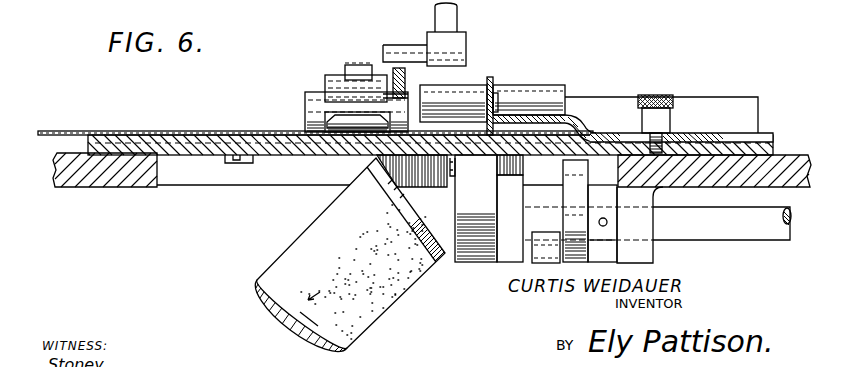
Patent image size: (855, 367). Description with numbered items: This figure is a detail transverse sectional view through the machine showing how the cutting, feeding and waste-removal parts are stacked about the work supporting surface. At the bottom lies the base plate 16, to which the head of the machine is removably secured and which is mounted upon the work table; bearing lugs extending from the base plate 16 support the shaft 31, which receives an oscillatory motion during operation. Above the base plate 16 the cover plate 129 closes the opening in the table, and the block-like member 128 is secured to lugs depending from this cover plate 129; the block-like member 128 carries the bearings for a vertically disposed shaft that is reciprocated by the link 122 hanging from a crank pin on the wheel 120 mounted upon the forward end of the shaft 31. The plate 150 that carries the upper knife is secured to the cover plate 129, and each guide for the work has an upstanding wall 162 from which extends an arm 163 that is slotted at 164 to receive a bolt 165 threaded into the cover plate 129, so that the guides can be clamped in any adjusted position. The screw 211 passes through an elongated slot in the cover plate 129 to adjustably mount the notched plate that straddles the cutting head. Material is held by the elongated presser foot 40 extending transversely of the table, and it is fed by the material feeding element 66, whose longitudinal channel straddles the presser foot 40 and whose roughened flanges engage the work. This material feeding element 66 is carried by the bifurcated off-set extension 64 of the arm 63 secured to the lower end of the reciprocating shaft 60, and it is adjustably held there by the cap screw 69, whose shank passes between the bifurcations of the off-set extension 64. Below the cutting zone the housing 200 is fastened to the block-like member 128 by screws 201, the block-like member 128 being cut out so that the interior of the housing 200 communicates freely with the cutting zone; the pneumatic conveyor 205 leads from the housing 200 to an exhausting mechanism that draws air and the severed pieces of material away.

The base plate 16 is at (80, 178).
The shaft 31 is at (704, 225).
The presser foot 40 is at (303, 117).
The shaft 60 is at (458, 15).
The arm 63 is at (415, 58).
The off-set extension 64 is at (387, 47).
The material feeding element 66 is at (315, 105).
The cap screw 69 is at (345, 72).
The wheel 120 is at (575, 193).
The link 122 is at (545, 247).
The block-like member 128 is at (468, 190).
The cover plate 129 is at (121, 146).
The plate 150 is at (570, 97).
The upstanding wall 162 is at (490, 77).
The arm 163 is at (602, 133).
The slot 164 is at (678, 135).
The bolt 165 is at (658, 95).
The housing 200 is at (413, 203).
The screws 201 is at (455, 168).
The pneumatic conveyor 205 is at (373, 310).
The screw 211 is at (222, 160).